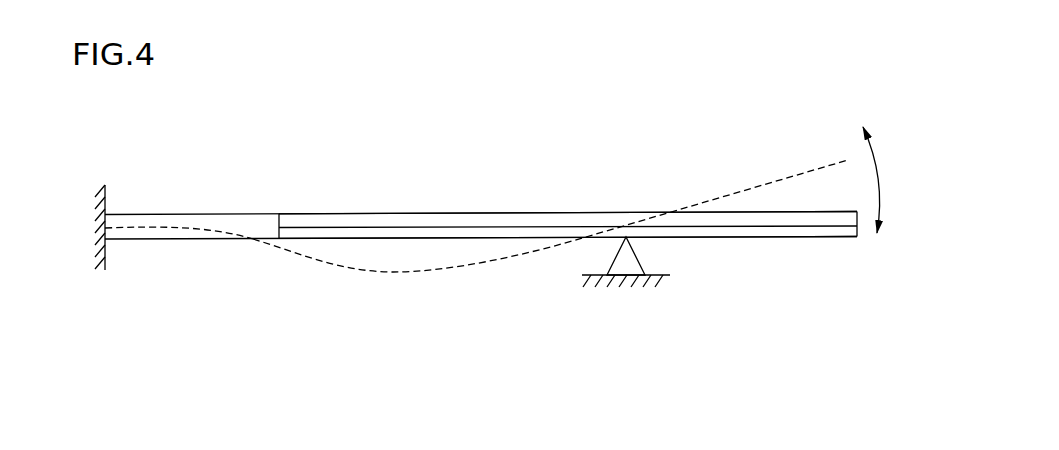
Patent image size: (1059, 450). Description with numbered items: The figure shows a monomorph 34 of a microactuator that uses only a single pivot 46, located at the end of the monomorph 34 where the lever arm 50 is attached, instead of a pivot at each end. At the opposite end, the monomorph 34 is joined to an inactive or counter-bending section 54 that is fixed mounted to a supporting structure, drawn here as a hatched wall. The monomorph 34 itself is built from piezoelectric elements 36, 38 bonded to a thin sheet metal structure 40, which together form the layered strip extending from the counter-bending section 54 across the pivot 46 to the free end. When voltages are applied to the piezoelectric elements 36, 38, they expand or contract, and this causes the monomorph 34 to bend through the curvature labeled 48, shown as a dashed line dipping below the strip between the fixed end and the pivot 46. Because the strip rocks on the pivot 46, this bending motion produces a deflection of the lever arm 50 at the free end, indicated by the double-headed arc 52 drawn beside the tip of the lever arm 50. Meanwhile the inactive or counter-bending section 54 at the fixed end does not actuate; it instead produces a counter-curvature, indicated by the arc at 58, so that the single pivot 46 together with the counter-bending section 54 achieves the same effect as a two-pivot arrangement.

The monomorph 34 is at (618, 87).
The piezoelectric element 36 is at (362, 215).
The piezoelectric element 38 is at (568, 160).
The thin sheet metal structure 40 is at (568, 172).
The pivot 46 is at (632, 276).
The curvature 48 is at (392, 276).
The lever arm 50 is at (834, 264).
The arc 52 is at (845, 160).
The inactive or counter-bending section 54 is at (252, 222).
The arc 58 is at (170, 231).